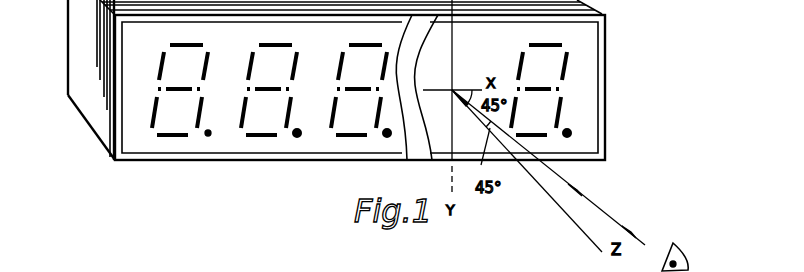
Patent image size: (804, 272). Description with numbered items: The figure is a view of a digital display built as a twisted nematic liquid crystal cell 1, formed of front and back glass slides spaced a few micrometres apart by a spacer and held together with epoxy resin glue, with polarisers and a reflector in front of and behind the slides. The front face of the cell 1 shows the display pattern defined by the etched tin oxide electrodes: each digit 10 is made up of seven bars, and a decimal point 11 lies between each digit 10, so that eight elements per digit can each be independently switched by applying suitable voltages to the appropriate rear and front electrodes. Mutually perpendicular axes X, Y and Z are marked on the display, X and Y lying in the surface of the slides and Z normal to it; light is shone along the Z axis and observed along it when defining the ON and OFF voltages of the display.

The cell 1 is at (319, 116).
The digit 10 is at (176, 137).
The decimal point 11 is at (209, 136).